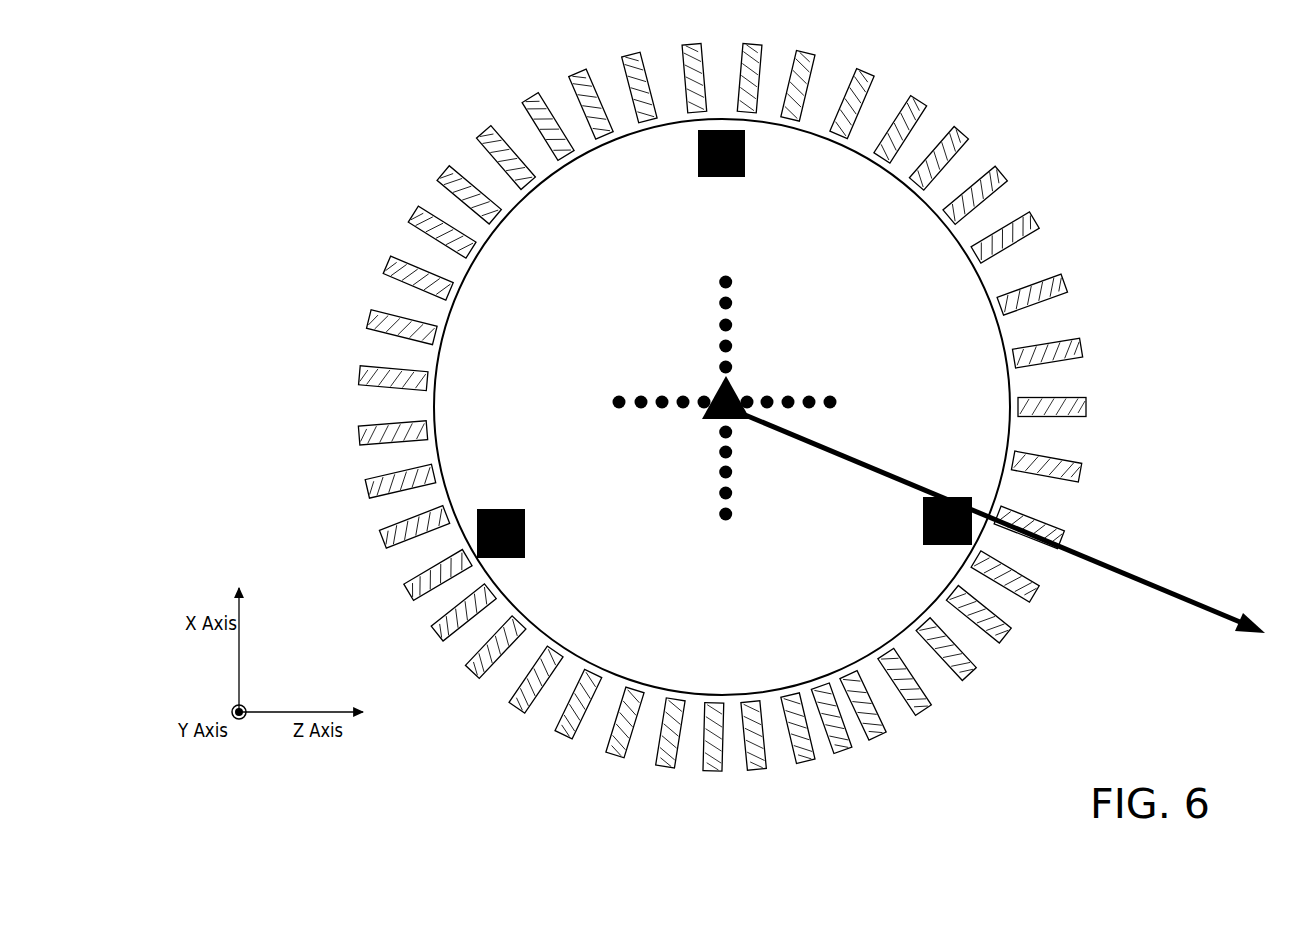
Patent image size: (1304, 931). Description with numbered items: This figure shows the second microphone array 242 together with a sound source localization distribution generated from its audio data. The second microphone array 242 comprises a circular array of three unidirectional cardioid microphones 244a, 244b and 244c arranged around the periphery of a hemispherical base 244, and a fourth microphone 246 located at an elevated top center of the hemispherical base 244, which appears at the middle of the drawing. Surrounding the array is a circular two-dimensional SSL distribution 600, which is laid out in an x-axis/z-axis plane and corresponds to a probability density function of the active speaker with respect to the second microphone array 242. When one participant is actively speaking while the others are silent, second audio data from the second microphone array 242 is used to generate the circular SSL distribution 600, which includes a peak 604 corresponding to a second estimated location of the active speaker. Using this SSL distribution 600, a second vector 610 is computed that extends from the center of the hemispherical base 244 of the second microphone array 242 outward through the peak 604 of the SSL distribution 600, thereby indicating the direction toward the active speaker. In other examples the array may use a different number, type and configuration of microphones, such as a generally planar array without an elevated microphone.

The second microphone array 242 is at (385, 117).
The circular two-dimensional SSL distribution 600 is at (969, 118).
The hemispherical base 244 is at (894, 248).
The unidirectional cardioid microphone 244a is at (508, 508).
The unidirectional cardioid microphone 244b is at (925, 517).
The unidirectional cardioid microphone 244c is at (698, 148).
The fourth microphone 246 is at (733, 390).
The second vector 610 is at (1141, 577).
The peak 604 is at (1104, 600).